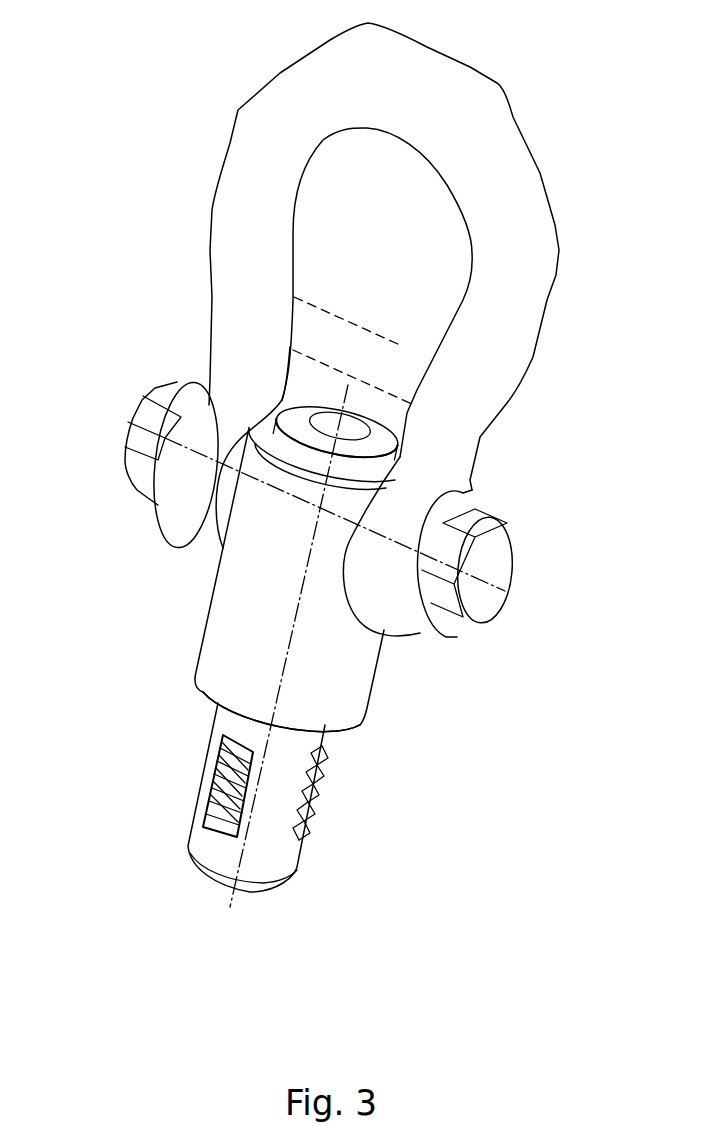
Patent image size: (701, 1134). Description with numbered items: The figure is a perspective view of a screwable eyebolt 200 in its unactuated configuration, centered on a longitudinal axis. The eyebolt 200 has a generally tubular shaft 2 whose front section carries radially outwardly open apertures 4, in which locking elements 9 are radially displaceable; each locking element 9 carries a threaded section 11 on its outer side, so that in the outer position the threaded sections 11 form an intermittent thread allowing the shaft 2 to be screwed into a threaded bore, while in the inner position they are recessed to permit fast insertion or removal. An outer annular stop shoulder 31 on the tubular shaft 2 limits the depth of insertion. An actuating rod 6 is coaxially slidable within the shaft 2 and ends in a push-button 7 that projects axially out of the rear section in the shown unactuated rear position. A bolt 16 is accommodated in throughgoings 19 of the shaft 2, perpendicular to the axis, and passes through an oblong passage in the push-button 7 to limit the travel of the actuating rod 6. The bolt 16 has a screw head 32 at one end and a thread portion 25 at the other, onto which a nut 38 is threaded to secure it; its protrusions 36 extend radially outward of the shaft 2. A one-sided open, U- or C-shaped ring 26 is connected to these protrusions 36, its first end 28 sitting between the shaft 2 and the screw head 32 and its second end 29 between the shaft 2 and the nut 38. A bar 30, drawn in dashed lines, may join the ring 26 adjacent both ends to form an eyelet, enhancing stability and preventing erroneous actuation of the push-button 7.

The eyebolt 200 is at (198, 93).
The one-sided open ring 26 is at (432, 73).
The bar 30 is at (327, 348).
The push-button 7 is at (358, 380).
The actuating rod 6 is at (352, 427).
The nut 38 is at (112, 518).
The second end 29 is at (168, 447).
The first end 28 is at (525, 541).
The screw head 32 is at (525, 563).
The bolt 16 is at (525, 563).
The protrusions 36 is at (495, 573).
The thread portion 25 is at (130, 461).
The throughgoings 19 is at (235, 483).
The tubular shaft 2 is at (260, 610).
The outer annular stop shoulder 31 is at (208, 690).
The aperture 4 is at (266, 780).
The locking element 9 is at (266, 787).
The threaded section 11 is at (405, 798).